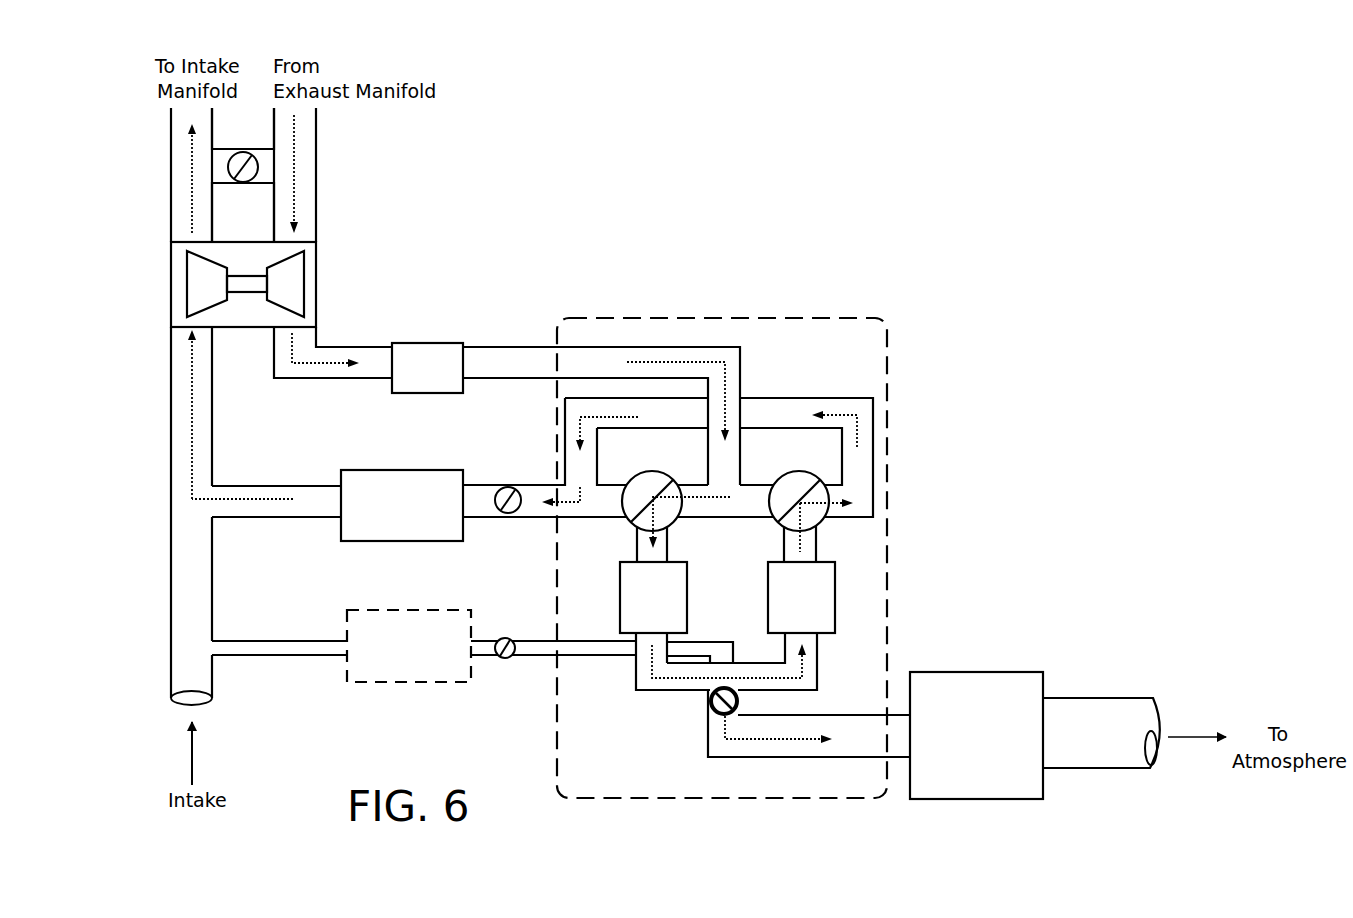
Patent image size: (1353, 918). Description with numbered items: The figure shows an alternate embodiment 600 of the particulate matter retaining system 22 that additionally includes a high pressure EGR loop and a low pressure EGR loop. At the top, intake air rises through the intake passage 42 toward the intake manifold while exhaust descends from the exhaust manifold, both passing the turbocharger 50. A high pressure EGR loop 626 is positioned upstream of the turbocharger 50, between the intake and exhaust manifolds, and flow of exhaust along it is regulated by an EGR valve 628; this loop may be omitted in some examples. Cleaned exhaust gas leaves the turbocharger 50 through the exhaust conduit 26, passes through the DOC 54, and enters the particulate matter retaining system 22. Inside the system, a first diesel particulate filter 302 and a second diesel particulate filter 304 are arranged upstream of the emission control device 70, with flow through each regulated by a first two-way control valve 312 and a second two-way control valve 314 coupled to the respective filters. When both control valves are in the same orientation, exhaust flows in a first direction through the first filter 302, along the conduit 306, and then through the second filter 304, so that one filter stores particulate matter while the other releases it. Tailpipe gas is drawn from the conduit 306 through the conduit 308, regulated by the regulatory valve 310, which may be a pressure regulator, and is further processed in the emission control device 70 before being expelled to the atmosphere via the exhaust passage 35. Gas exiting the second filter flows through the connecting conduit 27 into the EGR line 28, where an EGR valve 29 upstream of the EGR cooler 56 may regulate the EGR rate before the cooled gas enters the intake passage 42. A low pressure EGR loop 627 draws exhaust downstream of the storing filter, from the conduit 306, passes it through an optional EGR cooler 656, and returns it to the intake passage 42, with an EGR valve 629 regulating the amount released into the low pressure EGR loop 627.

The alternate embodiment 600 is at (1082, 98).
The intake passage 42 is at (171, 530).
The EGR valve 628 is at (241, 153).
The high pressure EGR loop 626 is at (266, 184).
The turbocharger 50 is at (171, 266).
The exhaust conduit 26 is at (336, 348).
The DOC 54 is at (420, 343).
The particulate matter retaining system 22 is at (795, 318).
The connecting conduit 27 is at (777, 398).
The EGR line 28 is at (293, 486).
The EGR cooler 56 is at (388, 541).
The EGR valve 29 is at (505, 487).
The first two-way control valve 312 is at (642, 471).
The second two-way control valve 314 is at (789, 471).
The first diesel particulate filter 302 is at (619, 582).
The second diesel particulate filter 304 is at (836, 582).
The low pressure EGR loop 627 is at (710, 641).
The conduit 306 is at (637, 680).
The regulatory valve 310 is at (708, 703).
The conduit 308 is at (773, 758).
The EGR cooler 656 is at (395, 682).
The EGR valve 629 is at (510, 640).
The emission control device 70 is at (950, 672).
The exhaust passage 35 is at (1108, 698).